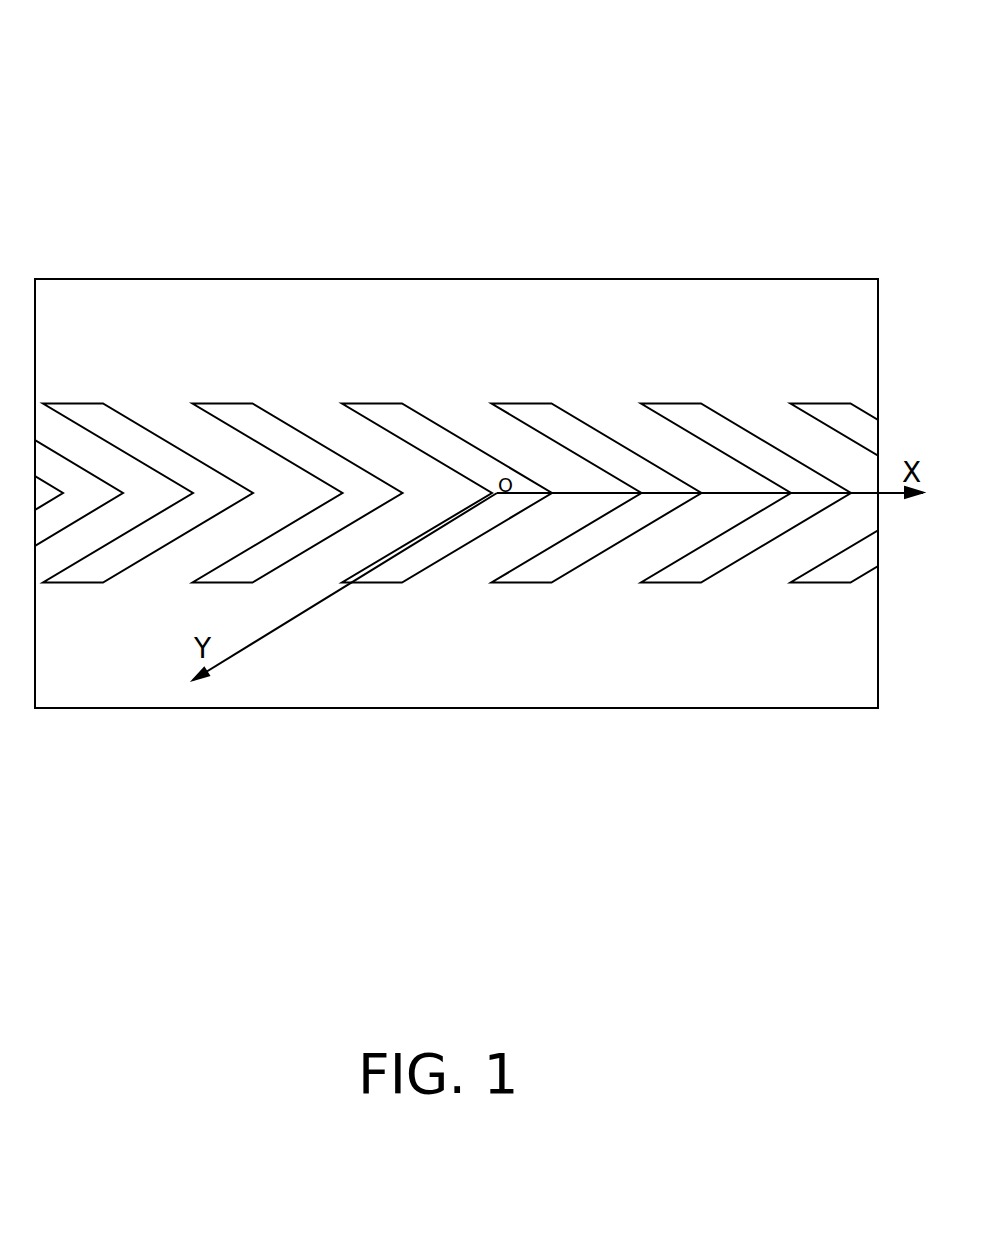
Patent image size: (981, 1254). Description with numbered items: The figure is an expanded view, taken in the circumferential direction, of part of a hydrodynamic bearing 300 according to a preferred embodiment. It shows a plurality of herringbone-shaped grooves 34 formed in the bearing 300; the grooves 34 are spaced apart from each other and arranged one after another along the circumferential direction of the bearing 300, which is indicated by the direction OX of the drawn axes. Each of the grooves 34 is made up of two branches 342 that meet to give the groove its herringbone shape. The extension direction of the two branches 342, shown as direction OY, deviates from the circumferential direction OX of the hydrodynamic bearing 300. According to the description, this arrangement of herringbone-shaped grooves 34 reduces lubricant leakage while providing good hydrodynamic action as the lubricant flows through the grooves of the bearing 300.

The hydrodynamic bearing 300 is at (456, 355).
The herringbone-shaped grooves 34 is at (508, 436).
The branches 342 is at (402, 423).